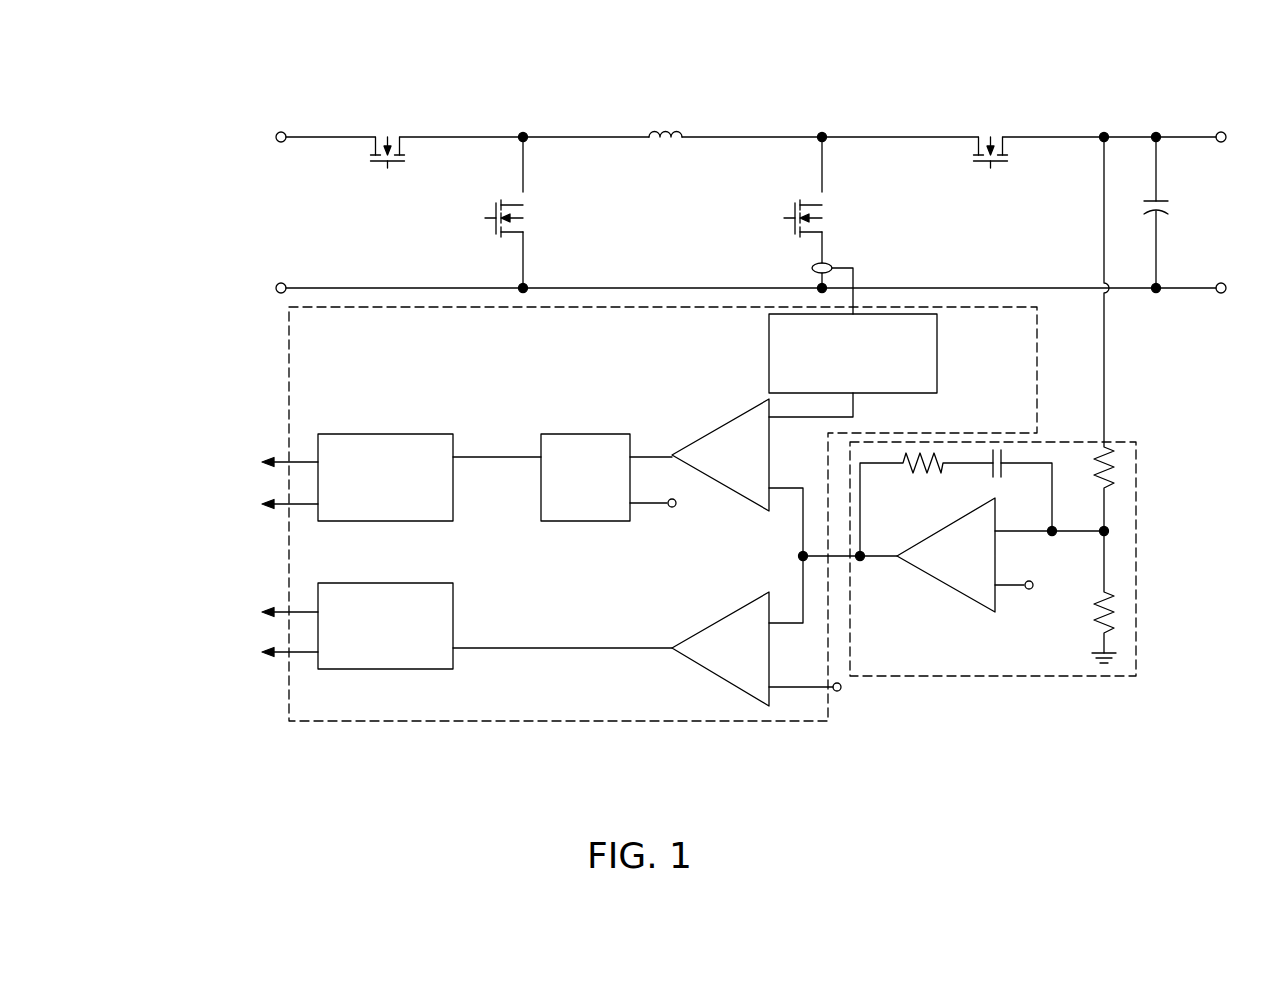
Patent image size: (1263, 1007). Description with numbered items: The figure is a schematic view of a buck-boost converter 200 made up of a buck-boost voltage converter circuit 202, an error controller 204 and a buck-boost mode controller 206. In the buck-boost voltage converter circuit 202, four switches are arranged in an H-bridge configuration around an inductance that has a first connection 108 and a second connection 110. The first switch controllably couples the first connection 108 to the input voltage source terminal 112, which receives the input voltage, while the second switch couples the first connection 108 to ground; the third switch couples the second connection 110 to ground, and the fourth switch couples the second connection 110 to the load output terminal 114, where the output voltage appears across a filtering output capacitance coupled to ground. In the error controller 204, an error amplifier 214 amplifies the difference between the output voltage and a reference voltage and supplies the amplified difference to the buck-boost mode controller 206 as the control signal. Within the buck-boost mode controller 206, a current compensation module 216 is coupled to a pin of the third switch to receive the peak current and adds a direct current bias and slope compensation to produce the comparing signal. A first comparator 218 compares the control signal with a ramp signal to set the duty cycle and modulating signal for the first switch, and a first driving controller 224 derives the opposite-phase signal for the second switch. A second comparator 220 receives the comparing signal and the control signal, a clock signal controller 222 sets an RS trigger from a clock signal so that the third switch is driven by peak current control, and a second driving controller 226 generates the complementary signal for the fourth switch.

The buck-boost converter 200 is at (180, 80).
The buck-boost voltage converter circuit 202 is at (706, 82).
The input voltage source terminal 112 is at (332, 137).
The first connection 108 is at (599, 137).
The second connection 110 is at (776, 137).
The load output terminal 114 is at (1178, 137).
The buck-boost mode controller 206 is at (532, 721).
The error controller 204 is at (1045, 677).
The error amplifier 214 is at (940, 580).
The current compensation module 216 is at (937, 343).
The first comparator 218 is at (695, 640).
The second comparator 220 is at (718, 424).
The clock signal controller 222 is at (582, 433).
The first driving controller 224 is at (380, 583).
The second driving controller 226 is at (380, 434).